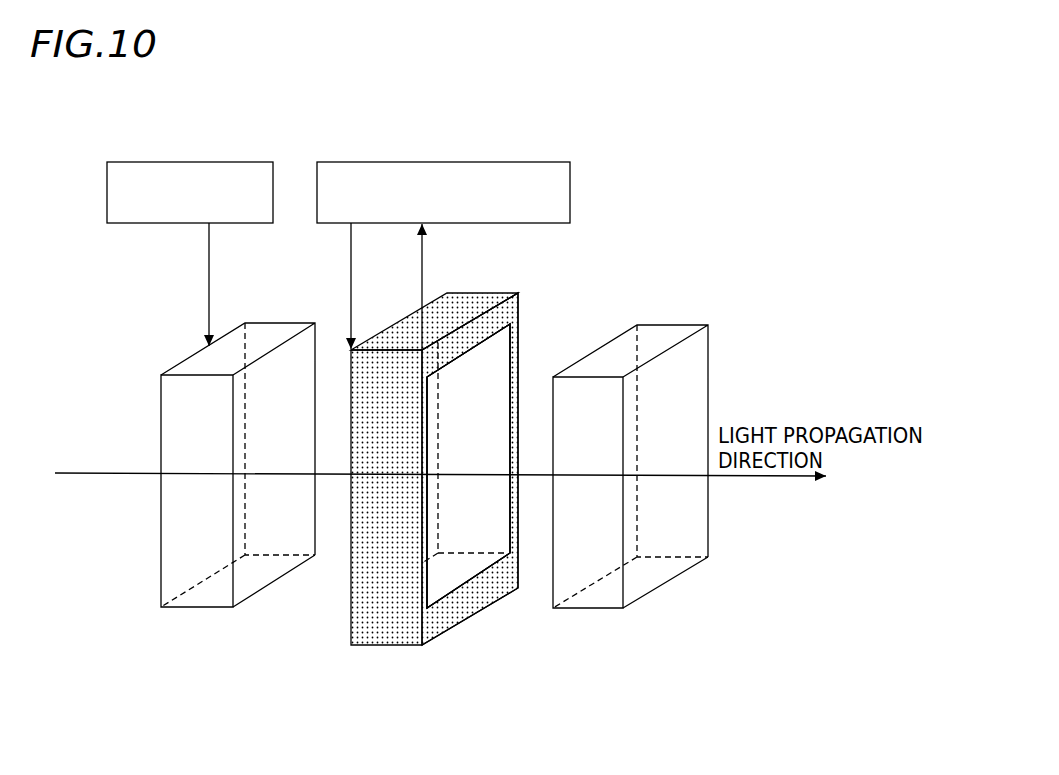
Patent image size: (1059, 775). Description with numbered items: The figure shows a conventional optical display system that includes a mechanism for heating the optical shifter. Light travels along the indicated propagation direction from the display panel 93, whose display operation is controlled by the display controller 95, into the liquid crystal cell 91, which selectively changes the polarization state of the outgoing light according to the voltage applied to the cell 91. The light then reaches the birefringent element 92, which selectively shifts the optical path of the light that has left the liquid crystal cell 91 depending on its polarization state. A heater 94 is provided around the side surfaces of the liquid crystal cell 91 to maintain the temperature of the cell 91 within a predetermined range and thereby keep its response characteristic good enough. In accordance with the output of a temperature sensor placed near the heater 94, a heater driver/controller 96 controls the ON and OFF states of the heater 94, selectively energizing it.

The liquid crystal cell 91 is at (498, 570).
The birefringent element 92 is at (649, 610).
The display panel 93 is at (216, 611).
The heater 94 is at (367, 649).
The display controller 95 is at (178, 162).
The heater driver/controller 96 is at (383, 162).